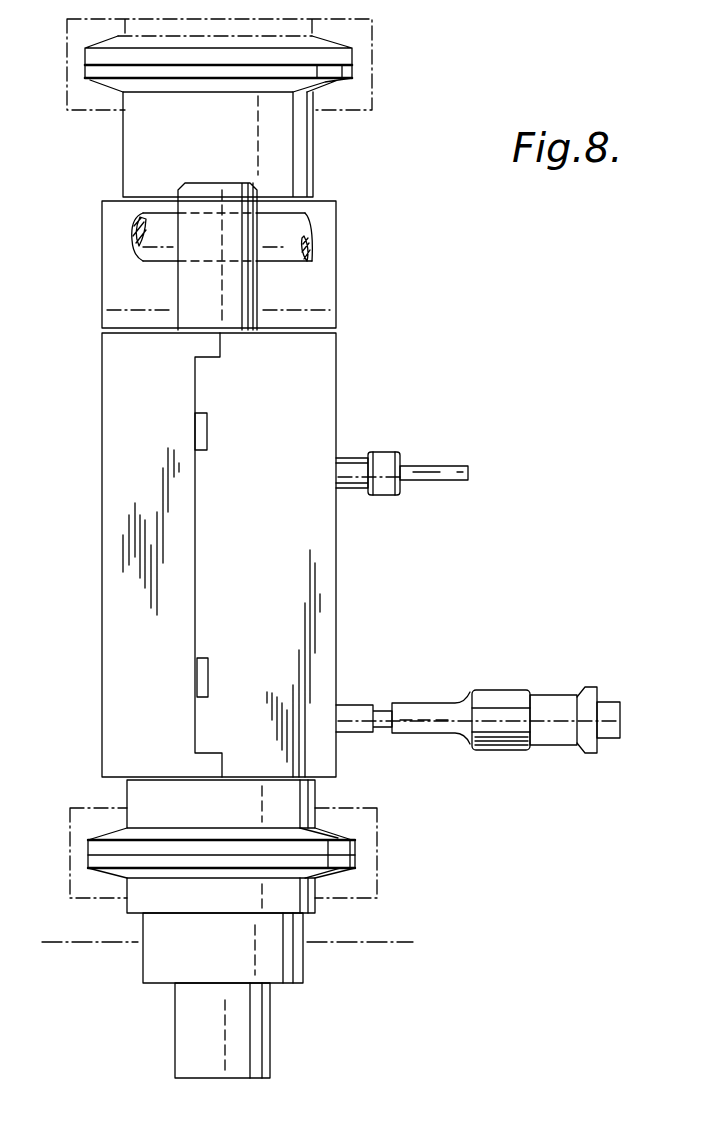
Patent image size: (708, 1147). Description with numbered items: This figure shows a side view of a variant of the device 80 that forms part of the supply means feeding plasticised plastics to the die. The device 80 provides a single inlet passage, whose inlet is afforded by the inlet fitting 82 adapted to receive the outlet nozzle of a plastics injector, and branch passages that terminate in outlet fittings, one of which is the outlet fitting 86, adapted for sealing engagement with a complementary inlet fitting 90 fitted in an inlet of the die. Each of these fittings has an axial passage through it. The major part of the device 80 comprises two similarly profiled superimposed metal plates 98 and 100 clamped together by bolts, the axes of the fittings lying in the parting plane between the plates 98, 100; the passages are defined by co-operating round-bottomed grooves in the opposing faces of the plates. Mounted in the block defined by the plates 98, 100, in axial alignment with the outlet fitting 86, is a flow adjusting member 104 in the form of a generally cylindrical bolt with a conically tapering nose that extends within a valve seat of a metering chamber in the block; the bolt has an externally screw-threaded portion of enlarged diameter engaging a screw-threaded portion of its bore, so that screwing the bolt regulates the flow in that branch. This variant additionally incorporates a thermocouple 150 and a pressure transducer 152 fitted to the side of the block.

The device 80 is at (350, 333).
The inlet fitting 82 is at (332, 72).
The outlet fitting 86 is at (305, 803).
The inlet fitting 90 is at (342, 859).
The plate 98 is at (310, 400).
The plate 100 is at (120, 395).
The flow adjusting member 104 is at (233, 237).
The thermocouple 150 is at (398, 443).
The pressure transducer 152 is at (370, 700).